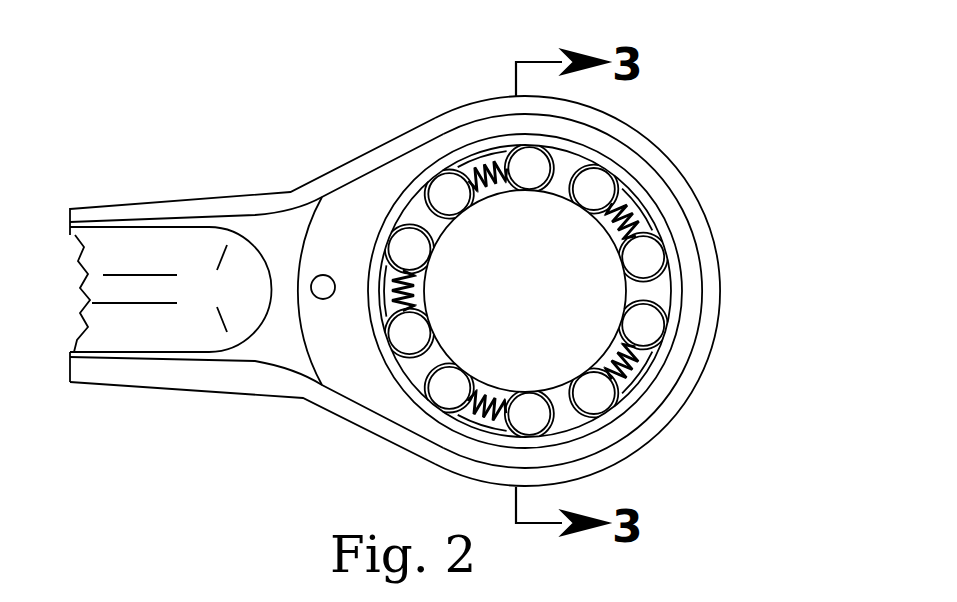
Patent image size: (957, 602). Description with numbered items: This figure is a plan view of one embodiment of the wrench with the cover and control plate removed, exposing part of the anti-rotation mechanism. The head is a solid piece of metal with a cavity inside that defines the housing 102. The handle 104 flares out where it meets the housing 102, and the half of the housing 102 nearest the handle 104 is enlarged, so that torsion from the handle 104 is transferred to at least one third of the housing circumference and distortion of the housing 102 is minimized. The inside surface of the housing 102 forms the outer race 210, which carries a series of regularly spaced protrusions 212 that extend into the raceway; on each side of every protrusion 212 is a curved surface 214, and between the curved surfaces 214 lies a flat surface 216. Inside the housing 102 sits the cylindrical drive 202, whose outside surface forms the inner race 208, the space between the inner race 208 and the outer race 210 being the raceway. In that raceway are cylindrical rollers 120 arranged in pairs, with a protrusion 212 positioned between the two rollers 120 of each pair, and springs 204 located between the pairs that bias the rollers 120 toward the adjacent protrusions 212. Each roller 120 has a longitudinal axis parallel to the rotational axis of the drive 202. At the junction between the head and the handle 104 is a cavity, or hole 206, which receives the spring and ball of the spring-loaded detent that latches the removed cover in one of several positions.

The housing 102 is at (472, 99).
The handle 104 is at (123, 202).
The rollers 120 is at (638, 397).
The drive 202 is at (537, 292).
The springs 204 is at (632, 226).
The cavity, or hole 206 is at (321, 275).
The inner race 208 is at (655, 293).
The outer race 210 is at (545, 395).
The protrusions 212 is at (553, 193).
The curved surface 214 is at (410, 195).
The flat surface 216 is at (377, 292).